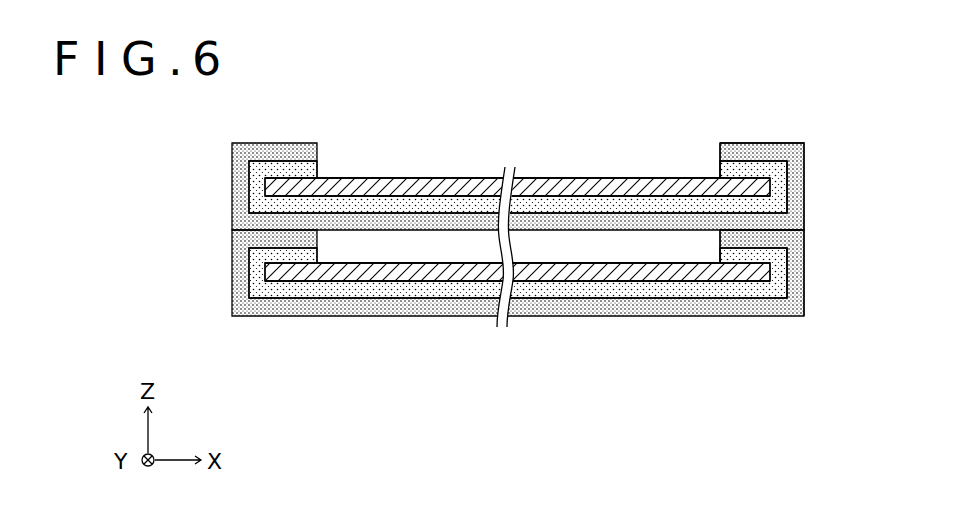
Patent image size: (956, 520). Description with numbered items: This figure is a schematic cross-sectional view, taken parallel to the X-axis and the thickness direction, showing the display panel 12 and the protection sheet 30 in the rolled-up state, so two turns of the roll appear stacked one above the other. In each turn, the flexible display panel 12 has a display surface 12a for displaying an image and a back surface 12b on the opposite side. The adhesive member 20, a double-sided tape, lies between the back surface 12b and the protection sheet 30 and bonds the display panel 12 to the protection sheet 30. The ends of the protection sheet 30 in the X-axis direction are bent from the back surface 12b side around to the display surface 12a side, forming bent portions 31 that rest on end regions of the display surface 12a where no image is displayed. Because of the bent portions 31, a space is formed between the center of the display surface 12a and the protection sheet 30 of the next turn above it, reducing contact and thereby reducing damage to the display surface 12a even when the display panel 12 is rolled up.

The display panel 12 is at (530, 182).
The display surface 12a is at (375, 263).
The back surface 12b is at (442, 197).
The adhesive member 20 is at (588, 208).
The protection sheet 30 is at (638, 223).
The bent portions 31 is at (753, 156).